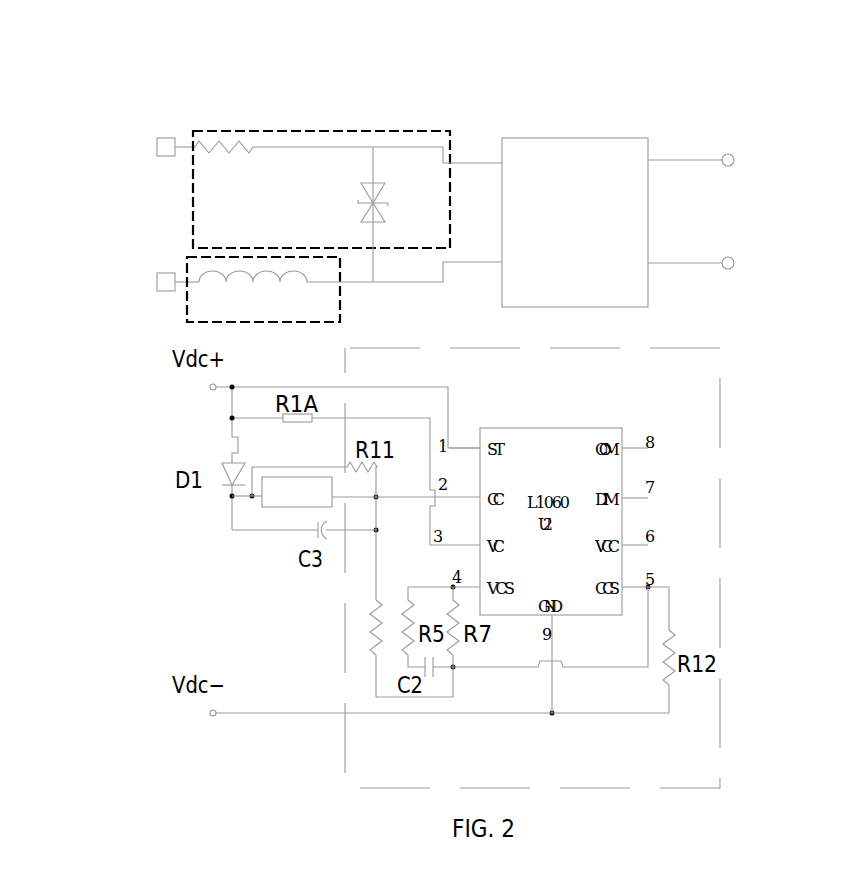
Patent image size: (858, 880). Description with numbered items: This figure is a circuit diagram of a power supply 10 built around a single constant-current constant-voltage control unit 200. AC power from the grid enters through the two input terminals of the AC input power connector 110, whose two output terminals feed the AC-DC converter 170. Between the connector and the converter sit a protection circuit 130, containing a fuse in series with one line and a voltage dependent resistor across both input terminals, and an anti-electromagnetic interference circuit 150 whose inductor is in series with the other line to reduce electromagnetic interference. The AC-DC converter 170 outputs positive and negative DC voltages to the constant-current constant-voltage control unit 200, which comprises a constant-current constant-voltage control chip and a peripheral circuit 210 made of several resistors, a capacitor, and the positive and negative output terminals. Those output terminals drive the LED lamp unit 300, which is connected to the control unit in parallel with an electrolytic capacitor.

The power supply 10 is at (749, 94).
The AC input power connector 110 is at (153, 183).
The protection circuit 130 is at (322, 131).
The anti-electromagnetic interference circuit 150 is at (187, 318).
The AC-DC converter 170 is at (578, 138).
The constant-current constant-voltage control unit 200 is at (720, 368).
The peripheral circuit 210 is at (352, 579).
The LED lamp unit 300 is at (283, 507).